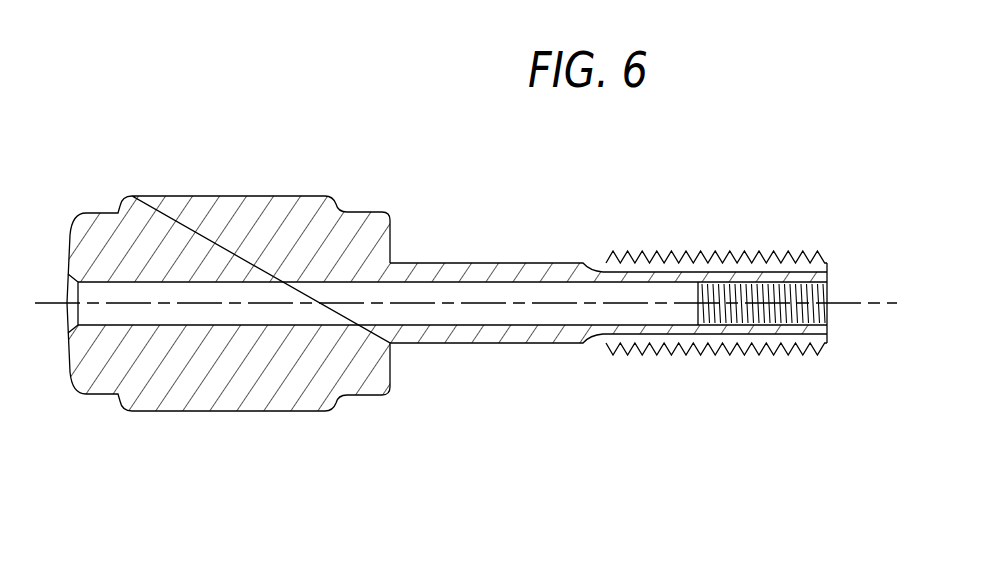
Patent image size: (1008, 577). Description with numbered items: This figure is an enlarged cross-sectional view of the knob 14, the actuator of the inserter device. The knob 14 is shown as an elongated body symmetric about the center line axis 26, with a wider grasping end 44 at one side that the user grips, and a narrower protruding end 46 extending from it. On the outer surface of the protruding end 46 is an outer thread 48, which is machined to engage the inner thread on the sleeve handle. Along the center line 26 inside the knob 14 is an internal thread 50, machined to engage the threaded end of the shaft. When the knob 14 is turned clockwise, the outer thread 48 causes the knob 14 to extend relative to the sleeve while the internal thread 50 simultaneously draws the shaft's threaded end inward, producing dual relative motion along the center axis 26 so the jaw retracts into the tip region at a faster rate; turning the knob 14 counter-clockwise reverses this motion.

The knob 14 is at (466, 302).
The center line axis 26 is at (868, 303).
The grasping end 44 is at (208, 197).
The protruding end 46 is at (465, 262).
The outer thread 48 is at (688, 260).
The internal thread 50 is at (828, 295).